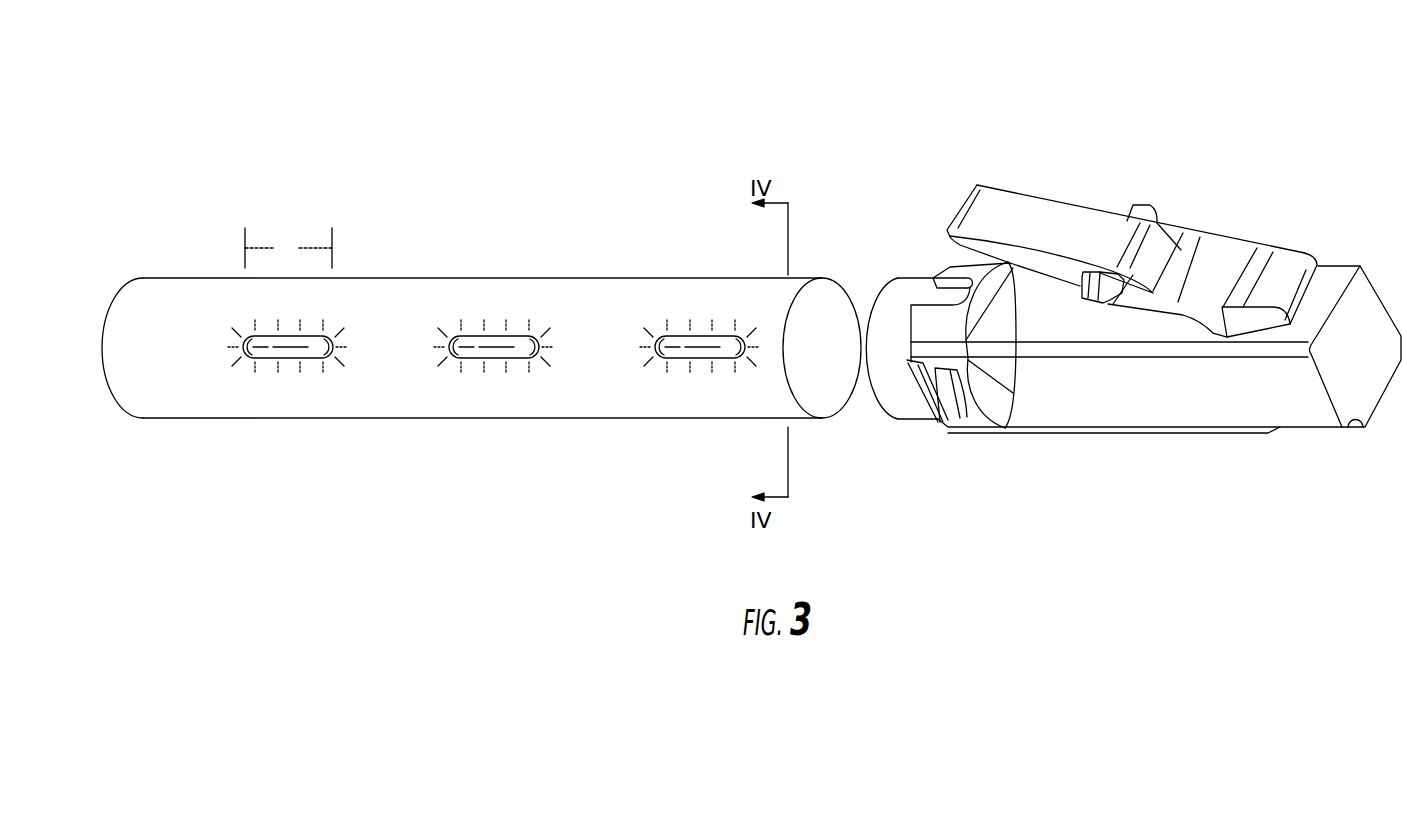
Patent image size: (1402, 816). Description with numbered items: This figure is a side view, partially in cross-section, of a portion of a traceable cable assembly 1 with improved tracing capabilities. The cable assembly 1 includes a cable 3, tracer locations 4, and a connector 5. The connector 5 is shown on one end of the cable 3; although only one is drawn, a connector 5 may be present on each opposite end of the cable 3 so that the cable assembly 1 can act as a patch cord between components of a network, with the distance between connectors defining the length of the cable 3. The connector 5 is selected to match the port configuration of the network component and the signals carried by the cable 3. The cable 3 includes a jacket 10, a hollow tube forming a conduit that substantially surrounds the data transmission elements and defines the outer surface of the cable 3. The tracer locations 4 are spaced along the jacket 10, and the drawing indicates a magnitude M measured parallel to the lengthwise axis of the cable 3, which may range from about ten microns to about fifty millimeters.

The cable assembly 1 is at (703, 108).
The cable 3 is at (372, 215).
The tracer locations 4 is at (675, 348).
The connector 5 is at (1127, 392).
The jacket 10 is at (193, 408).